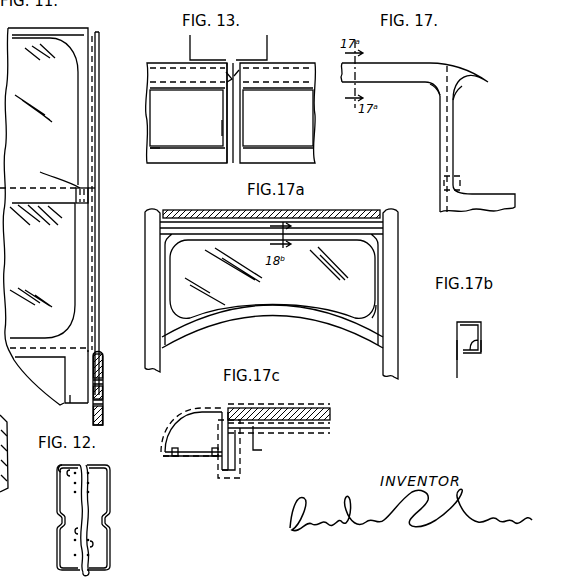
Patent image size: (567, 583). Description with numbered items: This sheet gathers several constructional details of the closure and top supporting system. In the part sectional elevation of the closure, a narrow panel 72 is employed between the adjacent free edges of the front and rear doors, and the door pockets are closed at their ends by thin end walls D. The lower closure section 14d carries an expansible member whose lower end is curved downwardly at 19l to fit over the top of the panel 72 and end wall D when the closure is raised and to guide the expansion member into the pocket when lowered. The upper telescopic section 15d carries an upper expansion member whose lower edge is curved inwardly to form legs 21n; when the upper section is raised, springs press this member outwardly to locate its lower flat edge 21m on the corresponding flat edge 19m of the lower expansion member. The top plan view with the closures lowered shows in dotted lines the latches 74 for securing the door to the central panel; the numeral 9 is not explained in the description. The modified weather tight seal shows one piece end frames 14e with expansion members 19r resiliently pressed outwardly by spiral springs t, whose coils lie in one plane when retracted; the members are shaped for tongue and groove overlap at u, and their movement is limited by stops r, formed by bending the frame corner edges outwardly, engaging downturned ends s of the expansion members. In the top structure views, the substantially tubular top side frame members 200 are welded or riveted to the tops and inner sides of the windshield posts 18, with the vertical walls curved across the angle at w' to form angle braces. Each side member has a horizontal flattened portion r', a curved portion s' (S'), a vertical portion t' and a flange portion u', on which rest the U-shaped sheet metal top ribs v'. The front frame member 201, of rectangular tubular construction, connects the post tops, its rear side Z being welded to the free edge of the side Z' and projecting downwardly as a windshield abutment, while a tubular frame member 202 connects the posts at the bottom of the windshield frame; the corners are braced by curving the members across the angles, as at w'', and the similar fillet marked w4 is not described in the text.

In FIG. 11, the upper telescopic section 15d is at (78, 135).
In FIG. 11, the legs 21n is at (47, 176).
In FIG. 11, the lower flat edge 21m is at (85, 190).
In FIG. 11, the flat edge 19m is at (90, 190).
In FIG. 11, the lower closure section 14d is at (75, 259).
In FIG. 11, the downwardly curved lower end of expansion member 19l is at (86, 364).
In FIG. 11, the narrow panel 72 is at (105, 360).
In FIG. 13, the narrow panel 72 is at (230, 104).
In FIG. 11, the end wall D is at (88, 396).
In FIG. 13, the end wall D is at (222, 128).
In FIG. 12, the one piece end frame 14e is at (60, 567).
In FIG. 12, the expansion member 19r is at (90, 574).
In FIG. 12, the tongue and groove overlap u is at (55, 520).
In FIG. 12, the downturned ends s is at (64, 466).
In FIG. 12, the stops r is at (46, 481).
In FIG. 12, the springs t is at (103, 537).
In FIG. 13, the latches 74 is at (186, 107).
In FIG. 13, the bottom band 9 is at (176, 150).
In FIG. 17, the top side frame member 200 is at (403, 66).
In FIG. 17A, the top side frame member 200 is at (160, 213).
In FIG. 17C, the top side frame member 200 is at (182, 421).
In FIG. 17, the windshield post 18 is at (446, 143).
In FIG. 17A, the windshield post 18 is at (145, 292).
In FIG. 17, the curved angle w' is at (445, 91).
In FIG. 17, the front frame member 201 is at (453, 104).
In FIG. 17A, the front frame member 201 is at (363, 233).
In FIG. 17B, the front frame member 201 is at (474, 350).
In FIG. 17, the tubular frame member 202 is at (443, 184).
In FIG. 17A, the tubular frame member 202 is at (273, 306).
In FIG. 17A, the curved corner brace w'' is at (272, 279).
In FIG. 17A, the corner fillet w4 is at (372, 318).
In FIG. 17B, the rear side Z is at (440, 350).
In FIG. 17B, the side Z' is at (495, 345).
In FIG. 17C, the curved portion S' is at (185, 430).
In FIG. 17C, the horizontal flattened portion r' is at (192, 469).
In FIG. 17C, the vertical portion t' is at (213, 429).
In FIG. 17C, the flange portion u' is at (226, 461).
In FIG. 17C, the top ribs v' is at (263, 442).